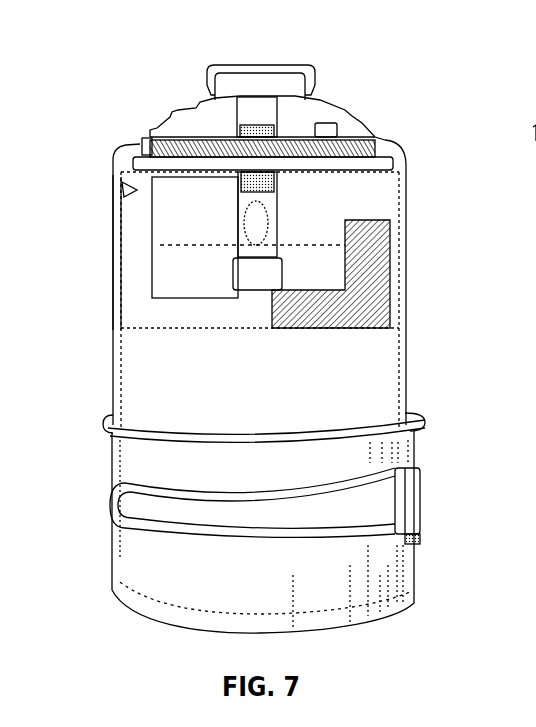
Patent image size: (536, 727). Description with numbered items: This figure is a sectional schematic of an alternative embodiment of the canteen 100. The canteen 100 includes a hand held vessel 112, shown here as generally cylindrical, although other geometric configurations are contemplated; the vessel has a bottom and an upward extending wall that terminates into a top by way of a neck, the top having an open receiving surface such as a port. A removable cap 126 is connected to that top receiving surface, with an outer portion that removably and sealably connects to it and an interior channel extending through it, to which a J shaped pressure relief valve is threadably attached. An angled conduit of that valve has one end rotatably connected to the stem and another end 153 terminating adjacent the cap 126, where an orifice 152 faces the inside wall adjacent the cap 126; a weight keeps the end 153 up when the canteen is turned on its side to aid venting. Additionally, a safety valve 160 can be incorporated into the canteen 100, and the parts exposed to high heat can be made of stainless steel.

The canteen 100 is at (390, 62).
The hand held vessel 112 is at (442, 188).
The removable cap 126 is at (146, 153).
The orifice 152 is at (120, 193).
The end of angled conduit 153 is at (112, 242).
The safety valve 160 is at (327, 133).